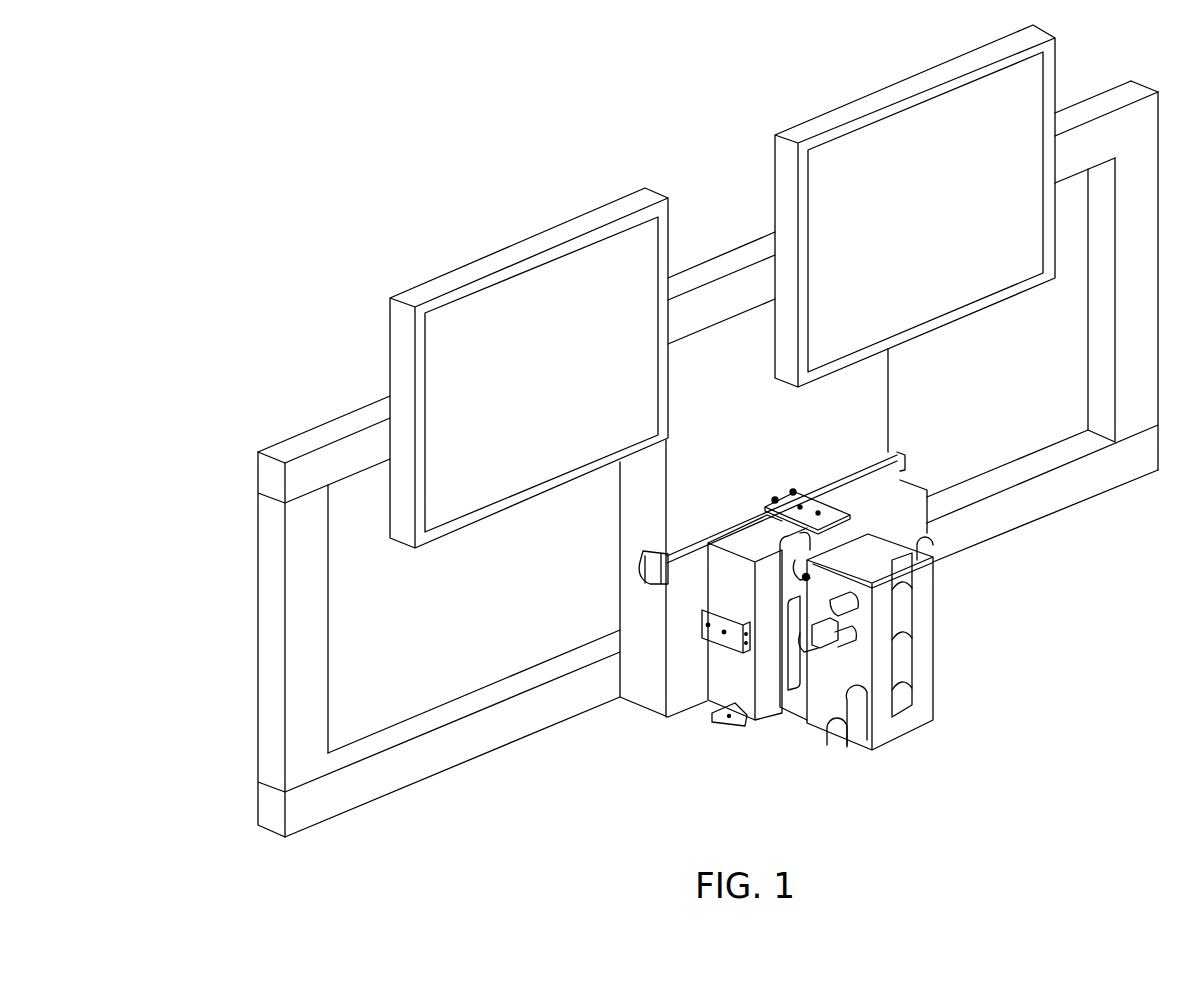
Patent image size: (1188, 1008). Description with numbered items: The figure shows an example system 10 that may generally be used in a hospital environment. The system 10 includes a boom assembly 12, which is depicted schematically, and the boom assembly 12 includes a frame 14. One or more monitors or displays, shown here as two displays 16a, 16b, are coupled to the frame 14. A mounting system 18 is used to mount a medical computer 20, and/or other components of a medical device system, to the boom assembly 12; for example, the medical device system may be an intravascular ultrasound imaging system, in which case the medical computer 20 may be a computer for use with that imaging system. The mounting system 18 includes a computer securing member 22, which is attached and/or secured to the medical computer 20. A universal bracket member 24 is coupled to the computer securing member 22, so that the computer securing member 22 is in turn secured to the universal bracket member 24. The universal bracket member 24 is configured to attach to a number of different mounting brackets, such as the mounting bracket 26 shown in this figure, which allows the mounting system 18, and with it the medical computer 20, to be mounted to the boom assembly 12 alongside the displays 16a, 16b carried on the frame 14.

The system 10 is at (257, 290).
The boom assembly 12 is at (250, 660).
The frame 14 is at (302, 542).
The display 16a is at (537, 277).
The display 16b is at (920, 115).
The mounting system 18 is at (764, 738).
The medical computer 20 is at (728, 595).
The computer securing member 22 is at (820, 692).
The universal bracket member 24 is at (777, 631).
The mounting bracket 26 is at (682, 570).